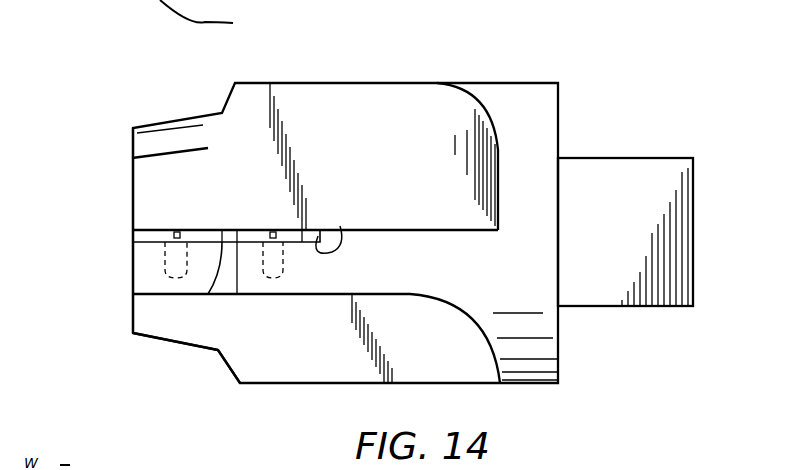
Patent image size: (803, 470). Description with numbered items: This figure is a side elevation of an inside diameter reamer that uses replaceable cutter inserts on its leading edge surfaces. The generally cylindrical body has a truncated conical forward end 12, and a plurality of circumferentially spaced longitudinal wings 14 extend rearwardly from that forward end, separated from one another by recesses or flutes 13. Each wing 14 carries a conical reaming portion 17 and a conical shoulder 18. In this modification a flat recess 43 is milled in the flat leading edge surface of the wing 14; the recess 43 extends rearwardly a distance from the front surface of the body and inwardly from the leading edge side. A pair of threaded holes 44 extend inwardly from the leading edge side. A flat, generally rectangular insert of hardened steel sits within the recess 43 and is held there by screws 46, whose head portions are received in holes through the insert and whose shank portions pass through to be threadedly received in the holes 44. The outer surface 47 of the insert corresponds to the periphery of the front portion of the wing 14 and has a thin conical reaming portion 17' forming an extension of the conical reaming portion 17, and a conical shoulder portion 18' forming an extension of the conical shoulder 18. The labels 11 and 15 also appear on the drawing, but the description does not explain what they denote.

The body / housing 11 is at (391, 83).
The truncated conical forward end 12 is at (122, 181).
The recesses or flutes 13 is at (458, 113).
The longitudinal wings 14 is at (392, 233).
The end block 15 is at (613, 236).
The conical reaming portion 17 is at (149, 235).
The conical reaming portion of insert 17' is at (226, 217).
The conical shoulder 18 is at (228, 320).
The conical shoulder portion of insert 18' is at (240, 243).
The flat recess 43 is at (341, 227).
The threaded holes 44 is at (165, 258).
The screws 46 is at (180, 231).
The outer surface of insert 47 is at (310, 234).